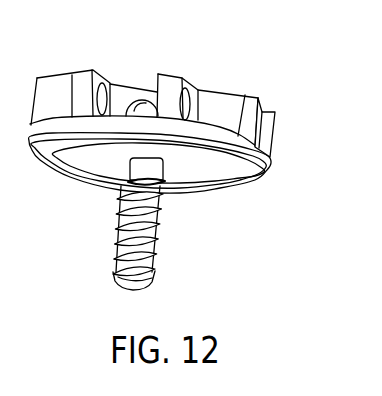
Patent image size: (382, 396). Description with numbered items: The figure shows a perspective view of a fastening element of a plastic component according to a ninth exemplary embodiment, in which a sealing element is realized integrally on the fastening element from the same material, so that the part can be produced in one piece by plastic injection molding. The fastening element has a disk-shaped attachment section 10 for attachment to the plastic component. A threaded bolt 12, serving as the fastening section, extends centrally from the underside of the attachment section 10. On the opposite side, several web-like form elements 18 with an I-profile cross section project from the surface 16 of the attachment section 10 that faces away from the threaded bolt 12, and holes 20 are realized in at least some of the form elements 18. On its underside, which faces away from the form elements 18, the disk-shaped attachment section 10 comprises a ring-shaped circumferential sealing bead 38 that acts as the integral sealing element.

The disk-shaped attachment section 10 is at (97, 158).
The threaded bolt 12 is at (157, 255).
The surface of the attachment section 16 is at (208, 130).
The form elements 18 is at (87, 82).
The holes 20 is at (143, 108).
The ring-shaped circumferential sealing bead 38 is at (253, 182).